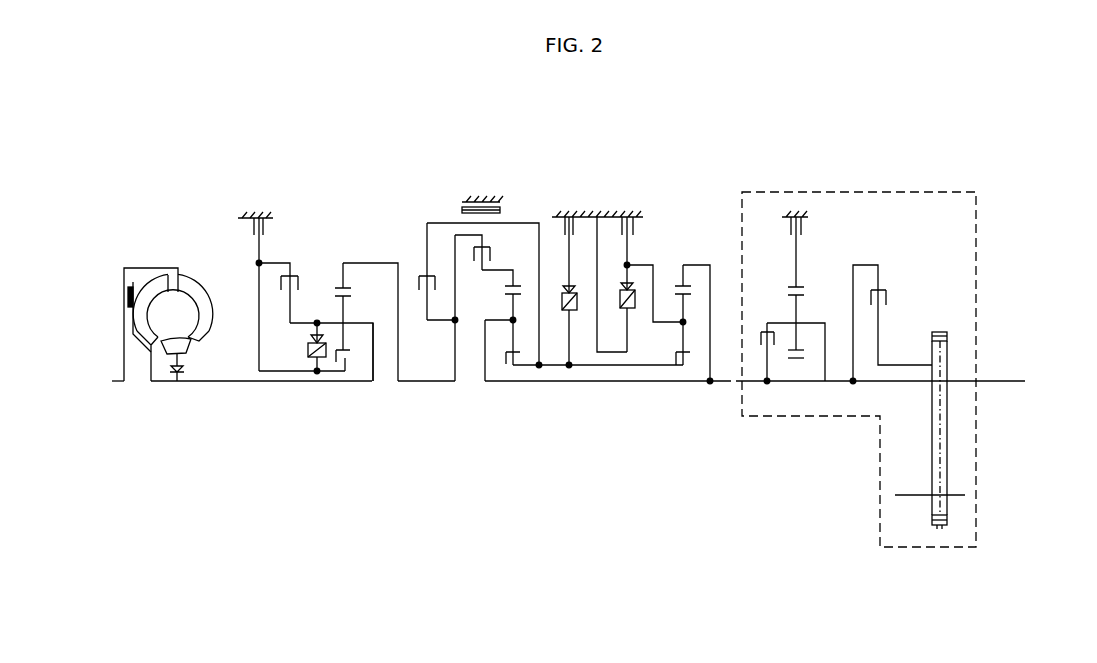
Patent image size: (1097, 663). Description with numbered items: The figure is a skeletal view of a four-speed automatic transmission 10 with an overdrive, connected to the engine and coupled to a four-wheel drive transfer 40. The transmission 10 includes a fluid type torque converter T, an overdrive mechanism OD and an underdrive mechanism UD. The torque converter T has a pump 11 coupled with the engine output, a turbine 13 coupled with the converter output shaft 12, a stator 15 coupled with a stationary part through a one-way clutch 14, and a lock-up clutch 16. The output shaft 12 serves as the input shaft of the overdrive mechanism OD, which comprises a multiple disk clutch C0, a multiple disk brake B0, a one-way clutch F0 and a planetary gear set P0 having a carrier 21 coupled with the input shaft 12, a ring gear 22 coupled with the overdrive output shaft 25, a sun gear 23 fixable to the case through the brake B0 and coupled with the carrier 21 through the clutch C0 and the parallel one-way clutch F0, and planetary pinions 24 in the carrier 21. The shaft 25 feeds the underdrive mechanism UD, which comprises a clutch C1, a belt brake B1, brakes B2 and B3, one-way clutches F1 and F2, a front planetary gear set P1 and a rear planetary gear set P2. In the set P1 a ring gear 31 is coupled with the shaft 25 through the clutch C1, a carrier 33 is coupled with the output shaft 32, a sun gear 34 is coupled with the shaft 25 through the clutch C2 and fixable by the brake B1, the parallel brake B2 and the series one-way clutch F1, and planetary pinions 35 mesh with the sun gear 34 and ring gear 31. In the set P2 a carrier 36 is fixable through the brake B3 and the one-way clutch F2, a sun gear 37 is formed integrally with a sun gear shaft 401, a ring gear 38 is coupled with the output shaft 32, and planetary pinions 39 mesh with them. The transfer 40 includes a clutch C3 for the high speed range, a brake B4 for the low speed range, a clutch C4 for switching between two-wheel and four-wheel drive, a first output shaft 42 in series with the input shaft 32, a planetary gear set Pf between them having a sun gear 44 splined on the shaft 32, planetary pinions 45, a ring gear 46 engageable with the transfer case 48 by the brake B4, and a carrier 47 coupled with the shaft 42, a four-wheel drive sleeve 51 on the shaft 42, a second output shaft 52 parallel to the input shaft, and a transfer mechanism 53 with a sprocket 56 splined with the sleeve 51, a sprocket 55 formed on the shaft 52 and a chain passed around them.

The 4-speed automatic transmission 10 is at (234, 201).
The torque converter T is at (154, 339).
The pump 11 is at (203, 330).
The output shaft of the torque converter 12 is at (240, 381).
The turbine 13 is at (143, 325).
The one-way clutch 14 is at (172, 373).
The stator 15 is at (163, 352).
The lock-up clutch 16 is at (128, 290).
The overdrive mechanism OD is at (258, 196).
The multiple disk brake B0 is at (263, 215).
The multiple disk clutch C0 is at (291, 276).
The one-way clutch F0 is at (308, 357).
The planetary gear set P0 is at (361, 296).
The carrier 21 is at (360, 323).
The ring gear 22 is at (342, 287).
The sun gear 23 is at (340, 355).
The planetary pinions 24 is at (346, 338).
The output shaft of the overdrive mechanism 25 is at (422, 381).
The multiple disk clutch C1 is at (483, 246).
The clutch C2 is at (427, 276).
The belt brake B1 is at (478, 202).
The multiple disk brake B2 is at (567, 215).
The multiple disk brake B3 is at (628, 213).
The one-way clutch F1 is at (564, 312).
The one-way clutch F2 is at (624, 312).
The front planetary gear set P1 is at (482, 308).
The ring gear 31 is at (514, 284).
The output shaft 32 is at (730, 383).
The carrier 33 is at (491, 330).
The sun gear 34 is at (508, 360).
The planetary pinions 35 is at (514, 338).
The sun gear shaft 401 is at (583, 368).
The underdrive mechanism UD is at (688, 316).
The rear planetary gear set P2 is at (678, 342).
The carrier 36 is at (667, 323).
The sun gear 37 is at (690, 357).
The ring gear 38 is at (683, 284).
The planetary pinions 39 is at (685, 337).
The 4-wheel drive transfer 40 is at (949, 187).
The brake B4 is at (802, 214).
The planetary gear set Pf is at (810, 292).
The ring gear 46 is at (793, 284).
The transfer case 48 is at (797, 280).
The clutch C3 is at (764, 346).
The carrier 47 is at (784, 325).
The sun gear 44 is at (798, 335).
The planetary pinions 45 is at (802, 358).
The clutch C4 is at (885, 293).
The 4-wheel drive sleeve 51 is at (897, 363).
The sprocket 56 is at (947, 336).
The first output shaft 42 is at (1005, 381).
The second output shaft 52 is at (955, 495).
The transfer mechanism 53 is at (955, 517).
The sprocket 55 is at (940, 525).